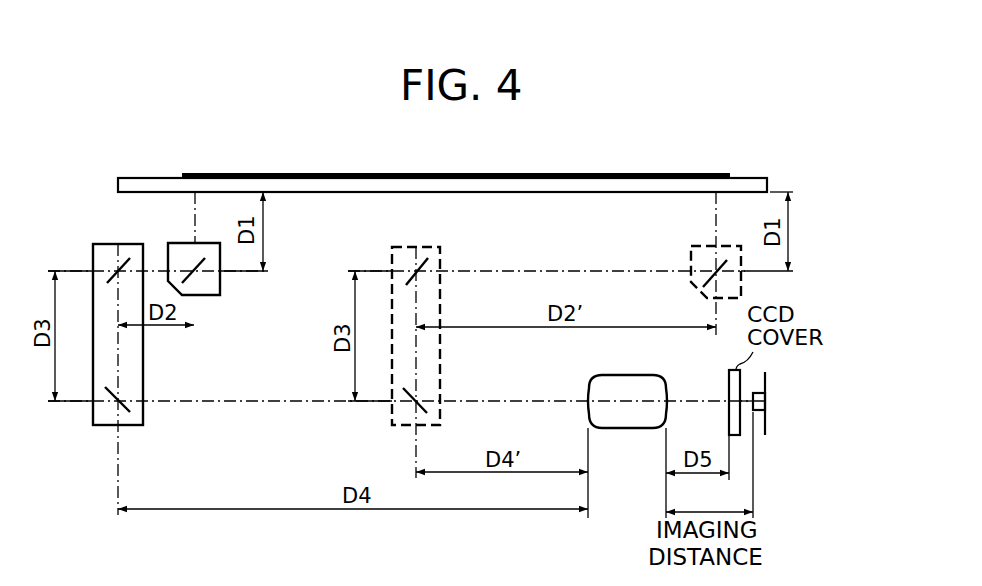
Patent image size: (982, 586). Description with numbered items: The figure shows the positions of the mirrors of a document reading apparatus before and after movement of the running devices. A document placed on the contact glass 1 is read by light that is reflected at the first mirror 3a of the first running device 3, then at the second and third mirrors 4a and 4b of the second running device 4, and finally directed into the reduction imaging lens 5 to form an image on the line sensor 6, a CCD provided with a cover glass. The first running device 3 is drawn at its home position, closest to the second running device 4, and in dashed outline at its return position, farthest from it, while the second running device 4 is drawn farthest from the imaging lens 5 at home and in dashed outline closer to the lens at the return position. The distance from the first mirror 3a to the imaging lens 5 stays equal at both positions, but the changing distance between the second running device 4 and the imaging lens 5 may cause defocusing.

The contact glass 1 is at (136, 178).
The first running device 3 is at (180, 243).
The first mirror 3a is at (196, 280).
The second running device 4 is at (143, 370).
The second mirror 4a is at (130, 260).
The third mirror 4b is at (108, 402).
The reduction imaging lens 5 is at (645, 376).
The line sensor 6 is at (757, 395).